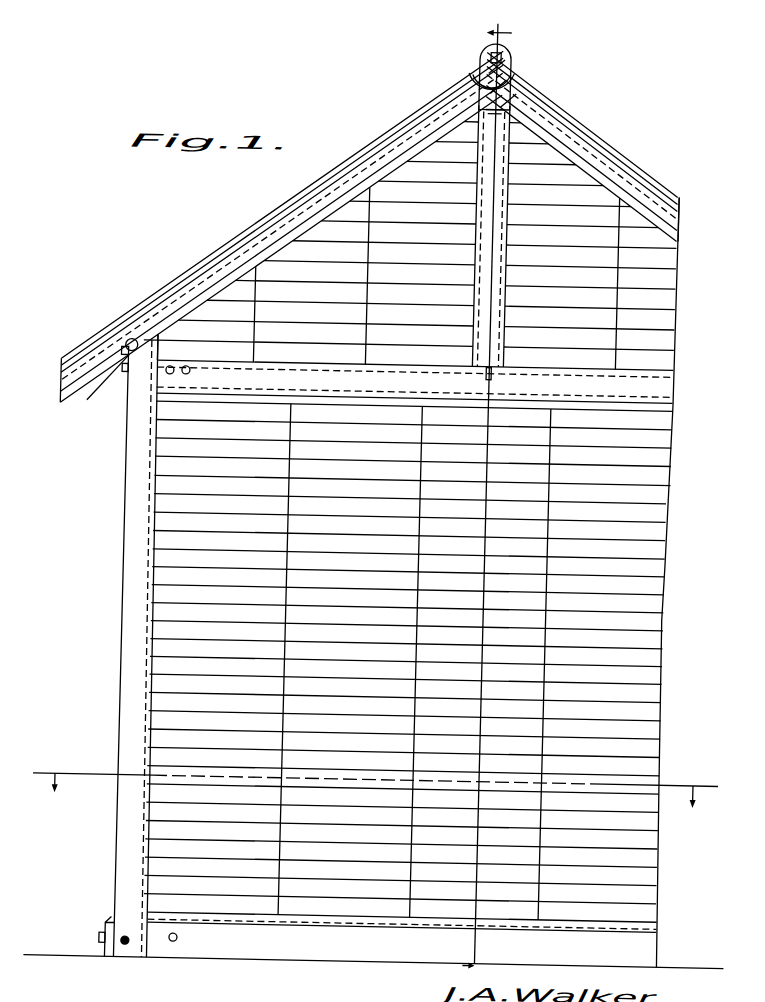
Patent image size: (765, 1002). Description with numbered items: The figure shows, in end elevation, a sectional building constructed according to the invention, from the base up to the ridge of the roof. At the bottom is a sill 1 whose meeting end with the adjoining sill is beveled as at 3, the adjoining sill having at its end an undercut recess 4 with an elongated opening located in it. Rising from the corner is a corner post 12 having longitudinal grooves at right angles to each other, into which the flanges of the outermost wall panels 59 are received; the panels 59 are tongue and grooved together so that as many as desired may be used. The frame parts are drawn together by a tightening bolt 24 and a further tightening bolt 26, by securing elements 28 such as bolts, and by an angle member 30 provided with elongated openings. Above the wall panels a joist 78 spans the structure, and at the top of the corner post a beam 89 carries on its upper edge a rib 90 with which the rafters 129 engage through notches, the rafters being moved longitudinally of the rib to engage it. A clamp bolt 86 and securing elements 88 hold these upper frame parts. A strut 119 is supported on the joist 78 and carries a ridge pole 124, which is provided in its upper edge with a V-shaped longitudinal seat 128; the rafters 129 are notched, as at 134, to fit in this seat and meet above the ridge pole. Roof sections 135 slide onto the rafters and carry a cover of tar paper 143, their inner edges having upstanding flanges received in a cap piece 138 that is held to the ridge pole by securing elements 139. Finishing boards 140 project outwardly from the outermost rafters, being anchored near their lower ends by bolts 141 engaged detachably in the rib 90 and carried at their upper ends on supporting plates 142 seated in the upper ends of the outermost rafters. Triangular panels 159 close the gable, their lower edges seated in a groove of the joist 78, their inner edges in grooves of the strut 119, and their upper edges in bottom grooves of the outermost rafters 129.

The sill 1 is at (372, 959).
The beveled ends 3 is at (487, 495).
The undercut recess 4 is at (379, 784).
The corner post 12 is at (130, 582).
The tightening bolt 24 is at (111, 941).
The tightening bolt 26 is at (135, 950).
The securing element 28 is at (189, 941).
The angle member 30 is at (131, 931).
The wall panel 59 is at (260, 893).
The joist 78 is at (391, 384).
The clamp bolt 86 is at (97, 387).
The securing element 88 is at (184, 376).
The beam 89 is at (135, 380).
The rib 90 is at (123, 350).
The strut 119 is at (480, 227).
The ridge pole 124 is at (495, 103).
The longitudinal seat 128 is at (477, 93).
The rafter 129 is at (382, 165).
The notch 134 is at (475, 86).
The roof section 135 is at (305, 195).
The cap piece 138 is at (481, 48).
The securing element 139 is at (485, 110).
The finishing board 140 is at (209, 272).
The bolt 141 is at (149, 333).
The supporting plate 142 is at (470, 80).
The cover 143 is at (243, 233).
The triangular panel 159 is at (386, 333).